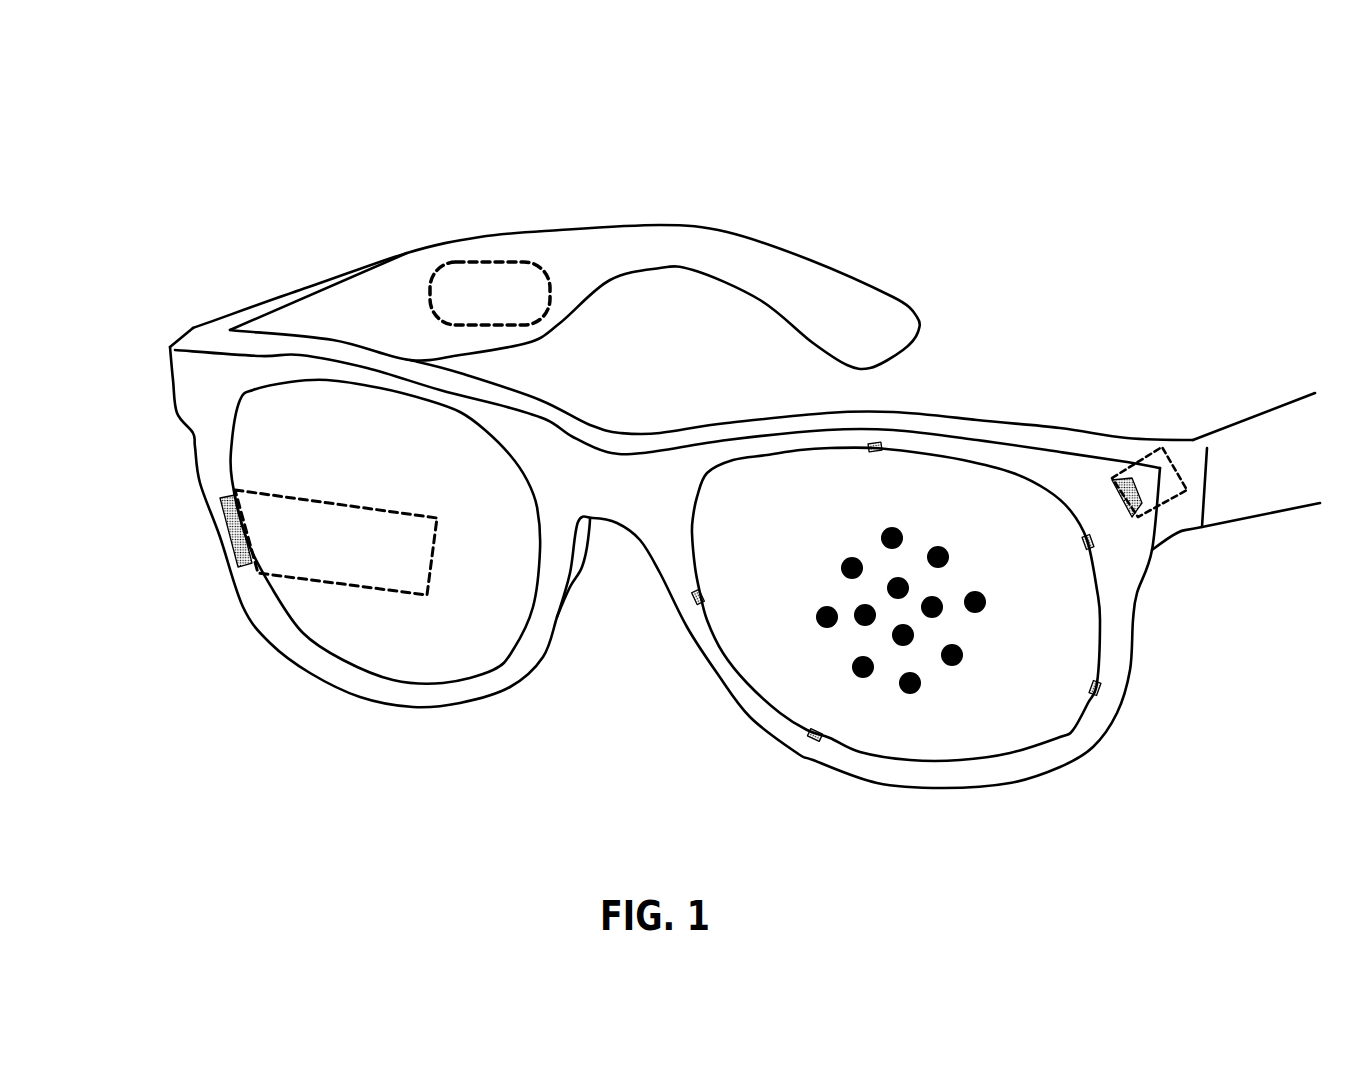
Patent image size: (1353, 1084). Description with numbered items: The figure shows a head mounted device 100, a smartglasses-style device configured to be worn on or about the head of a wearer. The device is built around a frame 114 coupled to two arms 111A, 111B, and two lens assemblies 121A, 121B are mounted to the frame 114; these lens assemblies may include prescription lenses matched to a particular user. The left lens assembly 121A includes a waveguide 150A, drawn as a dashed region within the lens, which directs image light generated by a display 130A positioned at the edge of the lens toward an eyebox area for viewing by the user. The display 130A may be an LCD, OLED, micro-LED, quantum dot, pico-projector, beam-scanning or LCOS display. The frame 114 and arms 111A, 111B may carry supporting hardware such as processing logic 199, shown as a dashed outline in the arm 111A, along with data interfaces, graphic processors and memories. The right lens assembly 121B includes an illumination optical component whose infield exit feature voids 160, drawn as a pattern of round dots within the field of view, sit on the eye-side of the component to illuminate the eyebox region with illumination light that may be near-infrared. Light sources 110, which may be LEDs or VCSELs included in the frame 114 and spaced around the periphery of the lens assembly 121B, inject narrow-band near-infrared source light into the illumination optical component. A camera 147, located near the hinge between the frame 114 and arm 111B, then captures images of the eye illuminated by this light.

The head mounted device 100 is at (1280, 91).
The light sources 110 is at (872, 450).
The arm 111A is at (634, 263).
The arm 111B is at (1277, 481).
The frame 114 is at (222, 391).
The lens assembly 121A is at (503, 576).
The lens assembly 121B is at (924, 490).
The display 130A is at (233, 537).
The camera 147 is at (1170, 457).
The waveguide 150A is at (267, 490).
The exit feature voids 160 is at (852, 568).
The processing logic 199 is at (505, 308).